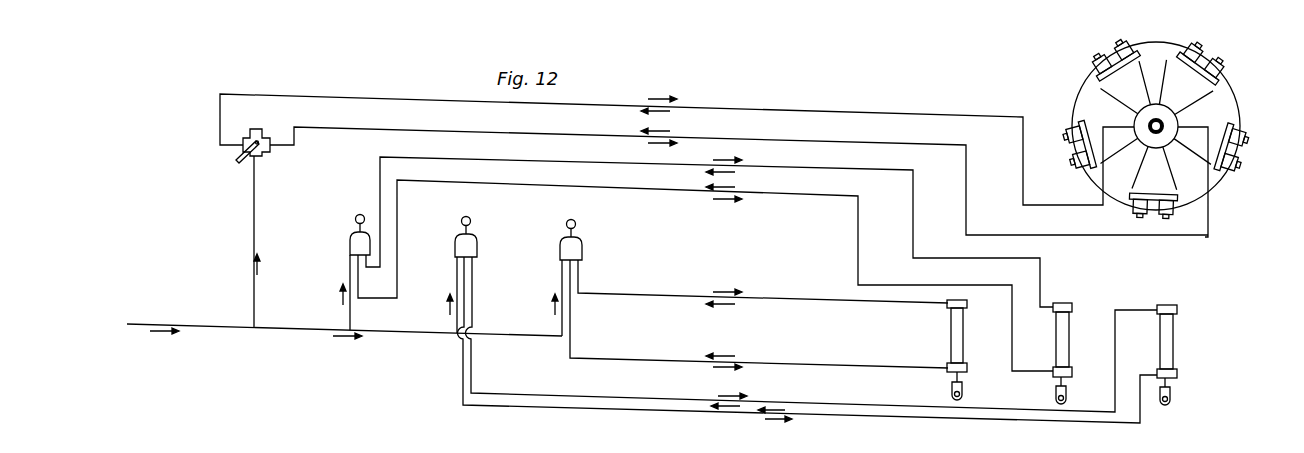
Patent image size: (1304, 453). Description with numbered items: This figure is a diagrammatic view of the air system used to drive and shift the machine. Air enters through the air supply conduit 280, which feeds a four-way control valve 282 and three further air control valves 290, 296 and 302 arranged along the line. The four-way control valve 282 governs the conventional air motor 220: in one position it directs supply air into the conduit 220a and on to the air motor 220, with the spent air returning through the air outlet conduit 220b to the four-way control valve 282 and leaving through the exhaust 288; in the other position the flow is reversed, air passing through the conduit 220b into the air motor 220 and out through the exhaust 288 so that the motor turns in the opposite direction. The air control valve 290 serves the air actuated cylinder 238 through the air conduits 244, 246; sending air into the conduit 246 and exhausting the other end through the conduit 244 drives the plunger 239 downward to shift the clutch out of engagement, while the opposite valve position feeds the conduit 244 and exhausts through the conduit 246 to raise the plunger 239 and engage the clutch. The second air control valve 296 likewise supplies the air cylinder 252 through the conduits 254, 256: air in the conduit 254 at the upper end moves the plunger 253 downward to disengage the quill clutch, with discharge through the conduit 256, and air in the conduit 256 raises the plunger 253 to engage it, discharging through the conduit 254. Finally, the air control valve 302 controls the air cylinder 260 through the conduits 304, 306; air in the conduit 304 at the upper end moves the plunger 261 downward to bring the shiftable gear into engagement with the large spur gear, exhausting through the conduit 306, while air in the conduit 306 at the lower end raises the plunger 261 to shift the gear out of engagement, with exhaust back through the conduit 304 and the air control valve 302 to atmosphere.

The air motor 220 is at (1217, 107).
The conduit 220a is at (333, 128).
The air outlet conduit 220b is at (920, 112).
The air actuated cylinder 238 is at (948, 329).
The plunger 239 is at (963, 383).
The air conduit 244 is at (802, 363).
The air conduit 246 is at (778, 298).
The air cylinder 252 is at (1174, 336).
The plunger 253 is at (1171, 384).
The conduit 254 is at (582, 397).
The conduit 256 is at (567, 407).
The air cylinder 260 is at (1068, 333).
The plunger 261 is at (1066, 381).
The air supply conduit 280 is at (275, 330).
The four-way control valve 282 is at (265, 150).
The exhaust 288 is at (258, 128).
The air control valve 290 is at (579, 246).
The air control valve 296 is at (472, 244).
The air control valve 302 is at (350, 240).
The conduit 304 is at (380, 184).
The conduit 306 is at (398, 211).